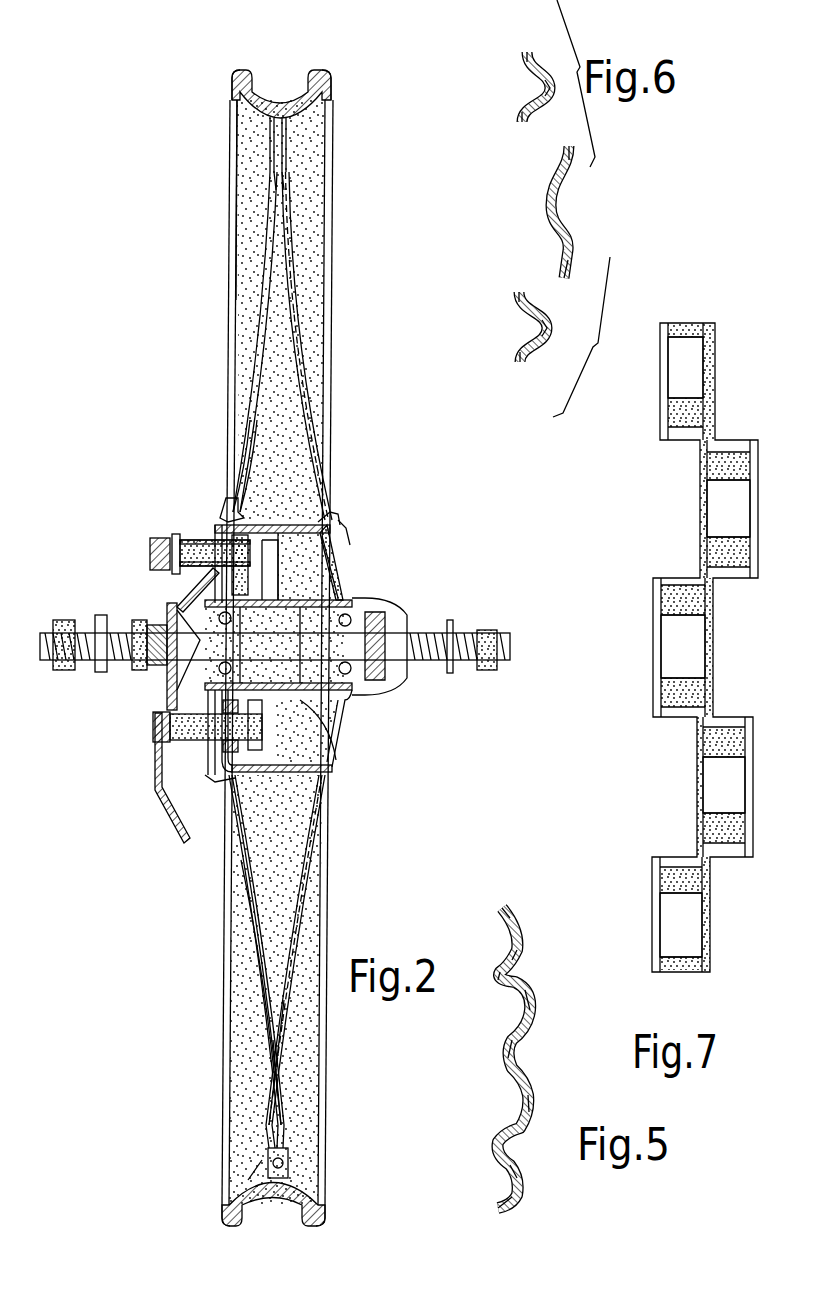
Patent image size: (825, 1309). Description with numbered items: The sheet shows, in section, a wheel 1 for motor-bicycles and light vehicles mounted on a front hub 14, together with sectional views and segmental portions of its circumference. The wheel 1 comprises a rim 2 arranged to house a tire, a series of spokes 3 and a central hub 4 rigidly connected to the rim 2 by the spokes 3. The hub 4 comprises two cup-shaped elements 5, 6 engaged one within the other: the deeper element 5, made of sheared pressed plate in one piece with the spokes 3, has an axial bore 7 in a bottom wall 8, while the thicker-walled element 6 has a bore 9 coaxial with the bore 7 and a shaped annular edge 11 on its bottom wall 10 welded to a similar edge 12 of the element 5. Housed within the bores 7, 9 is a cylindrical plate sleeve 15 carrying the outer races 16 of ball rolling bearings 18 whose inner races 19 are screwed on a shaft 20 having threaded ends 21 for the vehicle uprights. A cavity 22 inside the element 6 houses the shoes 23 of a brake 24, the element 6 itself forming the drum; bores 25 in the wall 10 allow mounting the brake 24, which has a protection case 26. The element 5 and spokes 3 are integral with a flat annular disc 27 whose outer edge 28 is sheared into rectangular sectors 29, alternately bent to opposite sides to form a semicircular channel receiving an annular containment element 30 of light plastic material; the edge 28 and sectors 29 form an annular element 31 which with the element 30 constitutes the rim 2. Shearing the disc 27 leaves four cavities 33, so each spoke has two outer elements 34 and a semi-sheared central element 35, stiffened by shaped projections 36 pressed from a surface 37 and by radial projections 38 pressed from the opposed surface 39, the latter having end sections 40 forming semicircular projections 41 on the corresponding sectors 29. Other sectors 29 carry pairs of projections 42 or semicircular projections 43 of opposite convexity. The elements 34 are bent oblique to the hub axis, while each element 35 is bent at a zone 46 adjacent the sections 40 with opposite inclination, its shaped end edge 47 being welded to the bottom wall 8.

In FIG. 2, the wheel 1 is at (355, 75).
In FIG. 2, the rim 2 is at (284, 82).
In FIG. 2, the spokes 3 is at (298, 216).
In FIG. 5, the spokes 3 is at (488, 1148).
In FIG. 2, the central hub 4 is at (347, 548).
In FIG. 2, the cup-shaped element 5 is at (290, 530).
In FIG. 2, the cup-shaped element 6 is at (266, 772).
In FIG. 2, the axial bore 7 is at (338, 732).
In FIG. 2, the bottom wall 8 is at (347, 570).
In FIG. 2, the bore 9 is at (272, 650).
In FIG. 2, the bottom wall 10 is at (330, 772).
In FIG. 2, the shaped annular edge 11 is at (230, 500).
In FIG. 2, the edge 12 is at (243, 519).
In FIG. 2, the hub 14 is at (414, 606).
In FIG. 2, the cylindrical plate sleeve 15 is at (343, 750).
In FIG. 2, the outer races 16 is at (370, 588).
In FIG. 2, the ball rolling bearings 18 is at (165, 620).
In FIG. 2, the inner races 19 is at (162, 655).
In FIG. 2, the shaft 20 is at (192, 600).
In FIG. 2, the threaded ends 21 is at (88, 620).
In FIG. 2, the cavity 22 is at (216, 776).
In FIG. 2, the shoes 23 is at (207, 758).
In FIG. 2, the brake 24 is at (193, 548).
In FIG. 2, the bores 25 is at (336, 536).
In FIG. 2, the protection case 26 is at (155, 752).
In FIG. 2, the annular disc 27 is at (234, 455).
In FIG. 2, the outer edge 28 is at (272, 136).
In FIG. 7, the outer edge 28 is at (716, 634).
In FIG. 2, the sectors 29 is at (260, 118).
In FIG. 7, the sectors 29 is at (678, 372).
In FIG. 2, the annular containment element 30 is at (298, 1203).
In FIG. 2, the annular element 31 is at (310, 1166).
In FIG. 7, the annular element 31 is at (726, 383).
In FIG. 2, the shaped cavities 33 is at (245, 936).
In FIG. 2, the outer elements 34 is at (258, 300).
In FIG. 6, the outer elements 34 is at (530, 64).
In FIG. 5, the outer elements 34 is at (520, 955).
In FIG. 2, the semi-sheared central element 35 is at (300, 315).
In FIG. 6, the semi-sheared central element 35 is at (570, 162).
In FIG. 5, the semi-sheared central element 35 is at (534, 1095).
In FIG. 2, the shaped projections 36 is at (300, 1152).
In FIG. 6, the shaped projections 36 is at (535, 92).
In FIG. 5, the shaped projections 36 is at (513, 940).
In FIG. 7, the shaped projections 36 is at (712, 410).
In FIG. 2, the surface 37 is at (262, 1040).
In FIG. 6, the surface 37 is at (519, 58).
In FIG. 5, the surface 37 is at (489, 983).
In FIG. 7, the surface 37 is at (702, 782).
In FIG. 2, the projection 38 is at (300, 290).
In FIG. 6, the projection 38 is at (546, 208).
In FIG. 5, the projection 38 is at (516, 1056).
In FIG. 2, the surface 39 is at (300, 1036).
In FIG. 6, the surface 39 is at (570, 264).
In FIG. 5, the surface 39 is at (535, 1005).
In FIG. 7, the surface 39 is at (696, 653).
In FIG. 2, the shaped end section 40 is at (284, 160).
In FIG. 2, the semicircular projection 41 is at (284, 131).
In FIG. 7, the projections 42 is at (740, 468).
In FIG. 2, the semicircular projections 43 is at (262, 1166).
In FIG. 7, the semicircular projections 43 is at (684, 323).
In FIG. 2, the zone 46 is at (262, 172).
In FIG. 2, the shaped end edge 47 is at (350, 548).